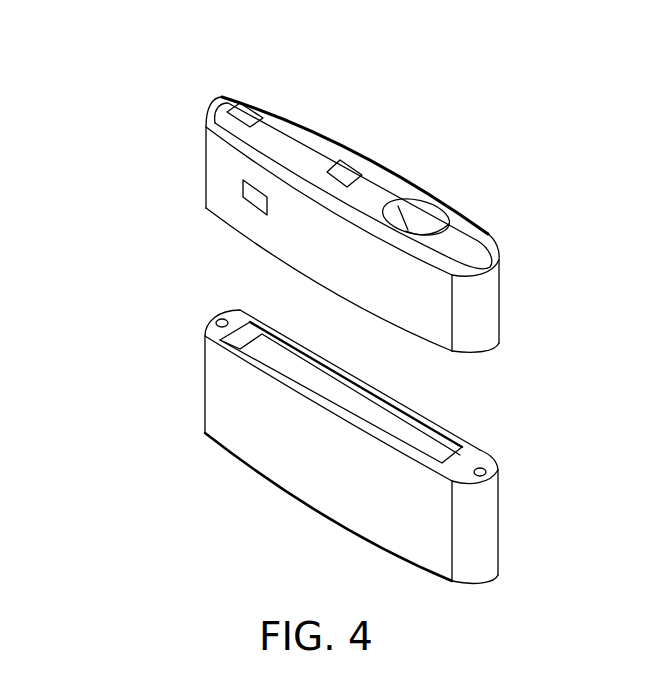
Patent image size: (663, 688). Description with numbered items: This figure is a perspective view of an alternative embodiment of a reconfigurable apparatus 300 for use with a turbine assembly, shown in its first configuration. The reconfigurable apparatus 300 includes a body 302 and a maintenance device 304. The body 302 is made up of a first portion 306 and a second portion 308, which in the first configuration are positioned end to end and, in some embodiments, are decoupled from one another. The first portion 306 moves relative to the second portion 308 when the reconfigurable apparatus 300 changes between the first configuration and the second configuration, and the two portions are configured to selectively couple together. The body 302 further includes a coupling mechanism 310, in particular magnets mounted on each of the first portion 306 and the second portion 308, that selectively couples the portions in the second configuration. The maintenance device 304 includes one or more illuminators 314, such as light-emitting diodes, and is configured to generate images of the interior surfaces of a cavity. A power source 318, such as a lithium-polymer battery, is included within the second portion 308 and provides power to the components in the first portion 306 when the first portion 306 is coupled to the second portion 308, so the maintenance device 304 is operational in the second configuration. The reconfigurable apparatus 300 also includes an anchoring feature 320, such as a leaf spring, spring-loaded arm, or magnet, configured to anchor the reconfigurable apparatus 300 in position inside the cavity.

The reconfigurable apparatus 300 is at (157, 57).
The body 302 is at (310, 252).
The maintenance device 304 is at (240, 99).
The first portion 306 is at (470, 298).
The second portion 308 is at (483, 513).
The coupling mechanism 310 is at (218, 320).
The illuminator 314 is at (248, 112).
The power source 318 is at (407, 427).
The anchoring feature 320 is at (243, 190).